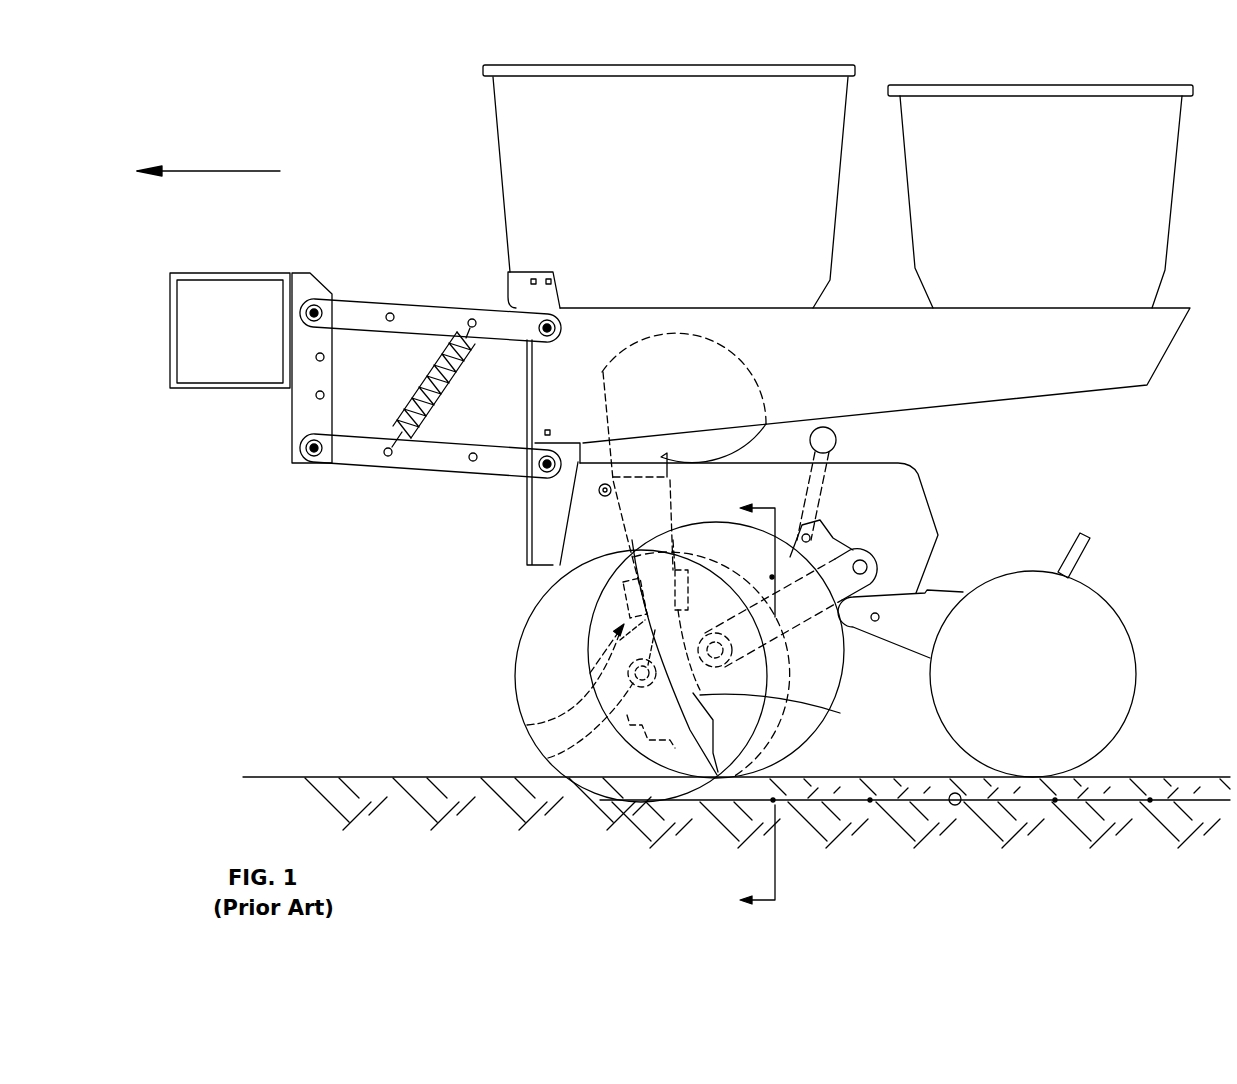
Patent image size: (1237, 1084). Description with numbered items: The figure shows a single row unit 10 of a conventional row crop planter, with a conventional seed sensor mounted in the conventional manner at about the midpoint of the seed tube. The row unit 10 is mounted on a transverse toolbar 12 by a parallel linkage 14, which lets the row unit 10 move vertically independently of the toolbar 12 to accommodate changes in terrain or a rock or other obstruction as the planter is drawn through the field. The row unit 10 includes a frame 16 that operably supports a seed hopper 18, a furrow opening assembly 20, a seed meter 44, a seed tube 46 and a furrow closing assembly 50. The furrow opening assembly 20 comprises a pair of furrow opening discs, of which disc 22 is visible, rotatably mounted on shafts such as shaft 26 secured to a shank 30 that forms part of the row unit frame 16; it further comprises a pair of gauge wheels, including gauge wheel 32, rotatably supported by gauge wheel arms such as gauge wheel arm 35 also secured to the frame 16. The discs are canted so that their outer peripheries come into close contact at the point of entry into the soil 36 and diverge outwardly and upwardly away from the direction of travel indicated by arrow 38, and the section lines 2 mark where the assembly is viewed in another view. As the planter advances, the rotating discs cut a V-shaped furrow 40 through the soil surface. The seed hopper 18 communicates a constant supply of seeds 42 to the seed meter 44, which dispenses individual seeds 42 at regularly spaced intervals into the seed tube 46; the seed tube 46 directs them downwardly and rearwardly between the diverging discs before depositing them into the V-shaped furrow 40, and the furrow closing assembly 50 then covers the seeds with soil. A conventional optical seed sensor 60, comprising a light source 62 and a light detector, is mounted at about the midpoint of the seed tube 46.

The lines 2- 2 is at (742, 705).
The row unit 10 is at (400, 172).
The toolbar 12 is at (208, 389).
The parallel linkage 14 is at (347, 478).
The frame 16 is at (500, 522).
The seed hopper 18 is at (676, 152).
The furrow opening assembly 20 is at (505, 630).
The furrow opening disc 22 is at (535, 691).
The shaft 26 is at (548, 758).
The shank 30 is at (541, 577).
The gauge wheel 32 is at (795, 735).
The gauge wheel arm 35 is at (838, 670).
The soil 36 is at (385, 778).
The arrow 38 is at (200, 171).
The V-shaped furrow 40 is at (733, 790).
The seeds 42 is at (955, 806).
The seed meter 44 is at (775, 355).
The seed tube 46 is at (840, 713).
The furrow closing assembly 50 is at (1166, 592).
The optical seed sensor 60 is at (690, 548).
The light source 62 is at (665, 517).